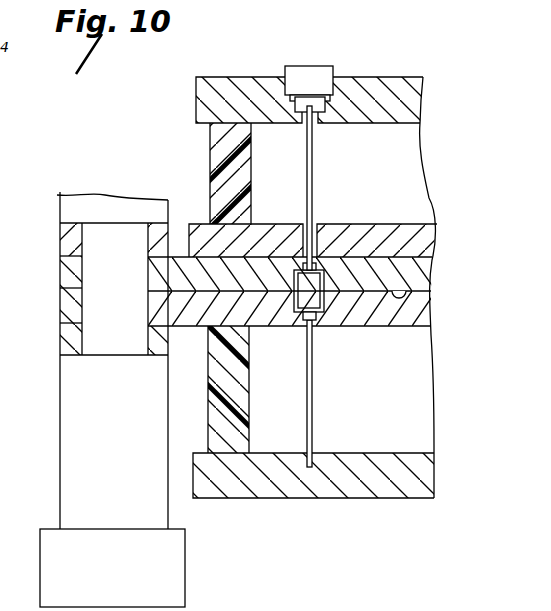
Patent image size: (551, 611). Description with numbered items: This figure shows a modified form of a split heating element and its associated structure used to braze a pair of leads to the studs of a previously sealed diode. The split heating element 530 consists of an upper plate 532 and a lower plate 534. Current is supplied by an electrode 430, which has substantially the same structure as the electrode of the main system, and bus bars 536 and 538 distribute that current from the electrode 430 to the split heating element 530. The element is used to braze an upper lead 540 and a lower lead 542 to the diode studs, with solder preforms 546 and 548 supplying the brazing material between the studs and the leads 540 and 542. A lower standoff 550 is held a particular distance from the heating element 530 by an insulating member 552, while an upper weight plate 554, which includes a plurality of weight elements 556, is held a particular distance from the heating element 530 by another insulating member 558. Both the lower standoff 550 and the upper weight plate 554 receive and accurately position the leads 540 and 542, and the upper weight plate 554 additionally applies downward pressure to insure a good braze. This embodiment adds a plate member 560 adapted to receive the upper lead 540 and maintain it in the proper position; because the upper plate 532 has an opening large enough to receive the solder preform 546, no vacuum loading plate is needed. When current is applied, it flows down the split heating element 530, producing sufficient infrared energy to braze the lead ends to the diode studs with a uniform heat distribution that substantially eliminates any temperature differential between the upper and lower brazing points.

The electrode 430 is at (131, 461).
The split heating element 530 is at (309, 310).
The upper plate 532 is at (410, 276).
The lower plate 534 is at (405, 318).
The bus bar 536 is at (75, 232).
The bus bar 538 is at (70, 324).
The upper lead 540 is at (315, 148).
The lower lead 542 is at (312, 424).
The solder preform 546 is at (345, 229).
The solder preform 548 is at (315, 323).
The lower standoff 550 is at (350, 470).
The insulating member 552 is at (207, 372).
The upper weight plate 554 is at (392, 92).
The weight element 556 is at (315, 87).
The insulating member 558 is at (225, 154).
The plate member 560 is at (270, 237).